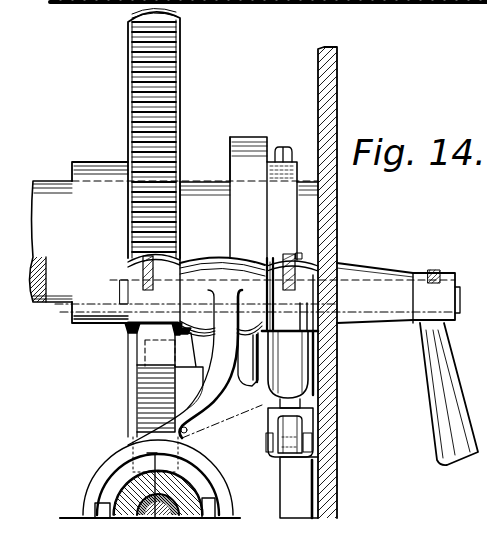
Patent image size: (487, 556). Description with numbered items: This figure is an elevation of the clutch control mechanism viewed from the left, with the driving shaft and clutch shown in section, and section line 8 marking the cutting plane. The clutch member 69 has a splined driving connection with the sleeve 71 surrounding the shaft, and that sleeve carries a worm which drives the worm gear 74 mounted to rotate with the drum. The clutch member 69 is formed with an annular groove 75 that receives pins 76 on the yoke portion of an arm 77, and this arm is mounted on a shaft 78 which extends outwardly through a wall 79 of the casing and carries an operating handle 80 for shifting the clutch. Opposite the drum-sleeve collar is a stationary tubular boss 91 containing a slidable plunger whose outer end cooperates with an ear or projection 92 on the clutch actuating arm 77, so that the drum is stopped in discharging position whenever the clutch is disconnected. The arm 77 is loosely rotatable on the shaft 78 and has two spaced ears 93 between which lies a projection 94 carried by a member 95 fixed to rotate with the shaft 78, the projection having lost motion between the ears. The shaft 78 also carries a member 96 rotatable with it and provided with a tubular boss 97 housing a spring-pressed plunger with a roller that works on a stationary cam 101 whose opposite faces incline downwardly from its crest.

The section line 8- 8 is at (265, 243).
The clutch member 69 is at (208, 478).
The sleeve 71 is at (130, 487).
The worm gear 74 is at (146, 112).
The annular groove 75 is at (187, 482).
The pins 76 is at (207, 507).
The arm 77 is at (192, 403).
The shaft 78 is at (123, 298).
The wall 79 is at (328, 193).
The operating handle 80 is at (447, 397).
The tubular boss 91 is at (250, 349).
The ear or projection 92 is at (240, 370).
The spaced ears 93 is at (183, 355).
The projection 94 is at (143, 348).
The member 95 is at (141, 273).
The member 96 is at (290, 292).
The tubular boss 97 is at (290, 372).
The stationary cam 101 is at (298, 490).